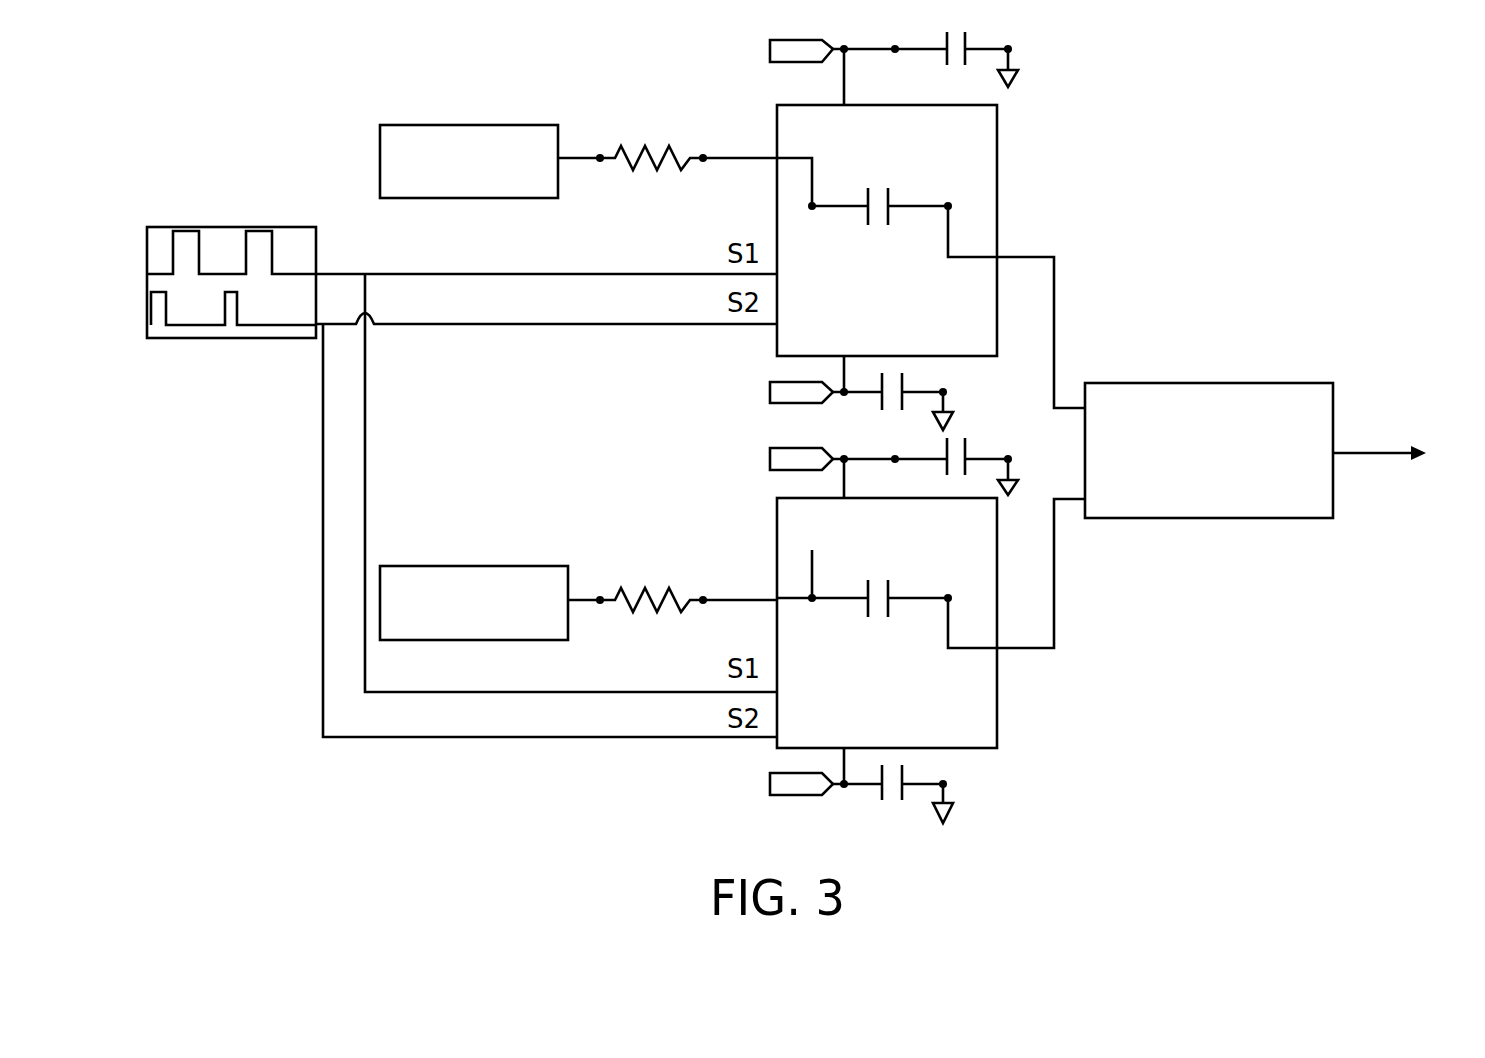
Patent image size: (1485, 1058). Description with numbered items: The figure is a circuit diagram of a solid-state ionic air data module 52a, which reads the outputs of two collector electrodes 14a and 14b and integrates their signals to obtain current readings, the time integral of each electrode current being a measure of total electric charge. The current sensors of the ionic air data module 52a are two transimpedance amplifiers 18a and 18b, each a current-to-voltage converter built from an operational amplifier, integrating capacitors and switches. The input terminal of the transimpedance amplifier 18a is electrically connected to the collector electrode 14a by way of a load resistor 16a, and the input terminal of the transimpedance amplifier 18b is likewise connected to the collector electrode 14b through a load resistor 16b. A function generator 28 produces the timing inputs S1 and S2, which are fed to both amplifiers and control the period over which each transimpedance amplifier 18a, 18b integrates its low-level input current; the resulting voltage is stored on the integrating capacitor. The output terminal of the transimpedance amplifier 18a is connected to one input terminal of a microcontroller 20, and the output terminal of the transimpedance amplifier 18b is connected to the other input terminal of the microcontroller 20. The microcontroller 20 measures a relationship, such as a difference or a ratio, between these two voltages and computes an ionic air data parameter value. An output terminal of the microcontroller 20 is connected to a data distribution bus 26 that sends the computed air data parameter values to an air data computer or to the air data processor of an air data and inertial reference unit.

The collector electrode 14a is at (518, 123).
The collector electrode 14b is at (518, 566).
The load resistor 16a is at (640, 162).
The load resistor 16b is at (640, 604).
The transimpedance amplifier 18a is at (997, 163).
The transimpedance amplifier 18b is at (997, 598).
The microcontroller 20 is at (1170, 383).
The data distribution bus 26 is at (1362, 453).
The function generator 28 is at (193, 338).
The solid-state ionic air data module 52a is at (1176, 202).